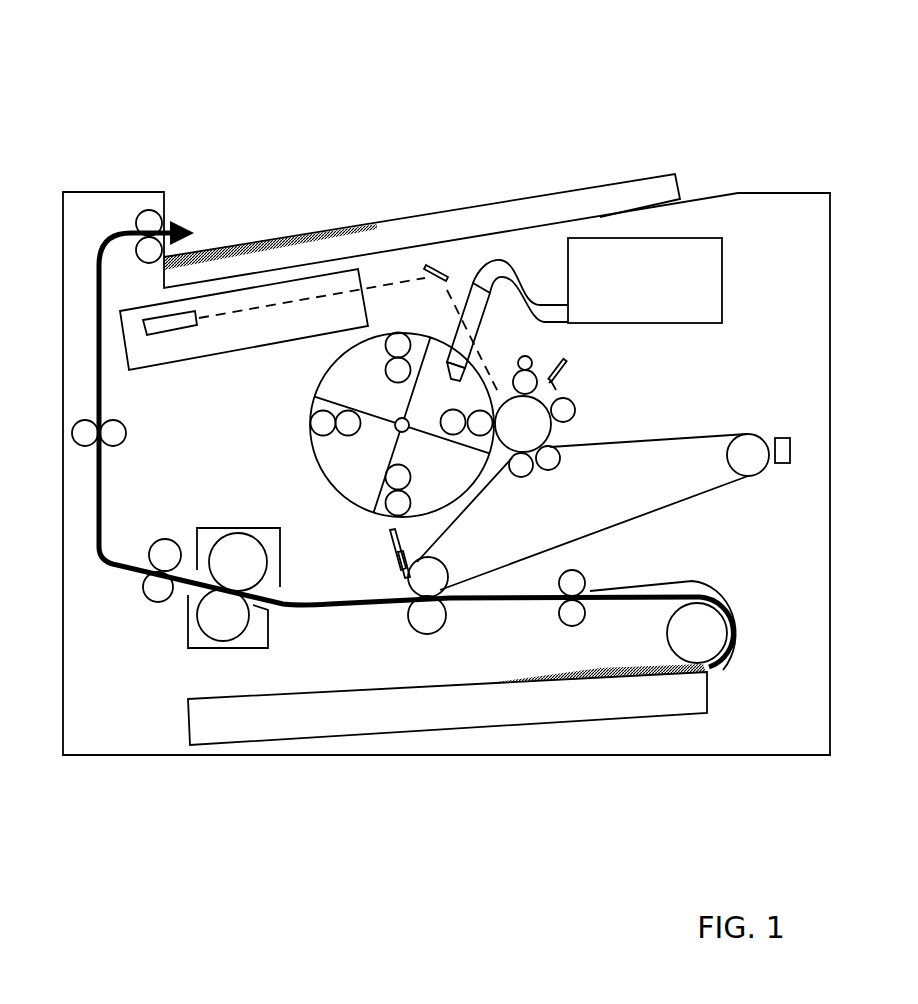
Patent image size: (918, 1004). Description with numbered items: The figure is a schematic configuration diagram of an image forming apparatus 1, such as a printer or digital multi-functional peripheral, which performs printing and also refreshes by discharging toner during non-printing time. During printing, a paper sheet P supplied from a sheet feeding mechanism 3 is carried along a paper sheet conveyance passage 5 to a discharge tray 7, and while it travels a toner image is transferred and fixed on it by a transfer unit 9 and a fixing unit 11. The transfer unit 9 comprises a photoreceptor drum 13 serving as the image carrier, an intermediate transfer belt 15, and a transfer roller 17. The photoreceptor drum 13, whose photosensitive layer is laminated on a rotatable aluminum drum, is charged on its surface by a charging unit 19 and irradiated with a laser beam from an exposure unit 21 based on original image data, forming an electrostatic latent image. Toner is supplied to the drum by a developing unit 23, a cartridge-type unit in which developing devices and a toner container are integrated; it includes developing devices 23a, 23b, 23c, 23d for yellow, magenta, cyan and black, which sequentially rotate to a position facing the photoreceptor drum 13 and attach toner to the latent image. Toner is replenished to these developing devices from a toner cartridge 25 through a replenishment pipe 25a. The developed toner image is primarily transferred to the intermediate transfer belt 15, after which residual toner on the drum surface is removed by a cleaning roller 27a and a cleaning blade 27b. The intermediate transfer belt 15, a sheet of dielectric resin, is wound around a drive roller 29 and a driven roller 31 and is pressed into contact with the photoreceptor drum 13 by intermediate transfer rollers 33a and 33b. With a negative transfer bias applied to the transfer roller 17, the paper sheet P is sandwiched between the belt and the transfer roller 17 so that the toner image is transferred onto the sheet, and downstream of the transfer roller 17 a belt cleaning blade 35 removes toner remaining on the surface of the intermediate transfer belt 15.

The image forming apparatus 1 is at (674, 98).
The sheet feeding mechanism 3 is at (738, 683).
The paper sheet conveyance passage 5 is at (95, 378).
The discharge tray 7 is at (541, 226).
The transfer unit 9 is at (611, 429).
The fixing unit 11 is at (187, 615).
The photoreceptor drum 13 is at (583, 450).
The intermediate transfer belt 15 is at (697, 502).
The transfer roller 17 is at (413, 633).
The charging unit 19 is at (528, 352).
The exposure unit 21 is at (193, 352).
The developing unit 23 is at (357, 447).
The developing device 23a is at (440, 353).
The developing device 23b is at (327, 380).
The developing device 23c is at (310, 438).
The developing device 23d is at (382, 507).
The toner cartridge 25 is at (722, 283).
The replenishment pipe 25a is at (478, 312).
The cleaning roller 27a is at (572, 410).
The cleaning blade 27b is at (566, 375).
The drive roller 29 is at (453, 567).
The driven roller 31 is at (753, 452).
The intermediate transfer roller 33a is at (513, 470).
The intermediate transfer roller 33b is at (547, 470).
The belt cleaning blade 35 is at (390, 552).
The paper sheet P is at (460, 687).